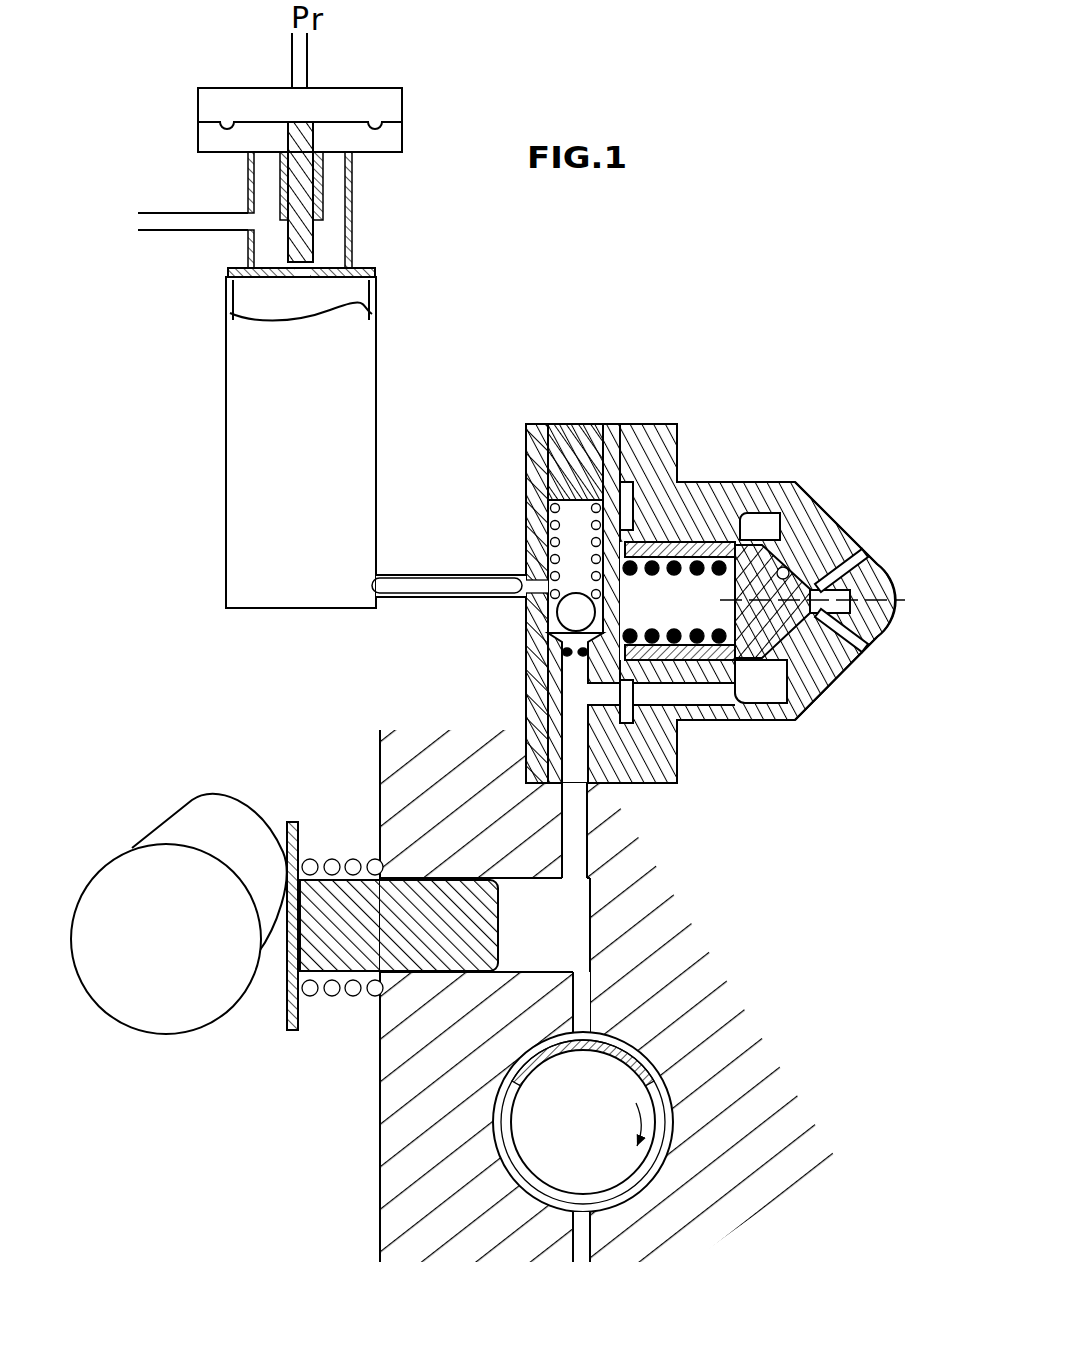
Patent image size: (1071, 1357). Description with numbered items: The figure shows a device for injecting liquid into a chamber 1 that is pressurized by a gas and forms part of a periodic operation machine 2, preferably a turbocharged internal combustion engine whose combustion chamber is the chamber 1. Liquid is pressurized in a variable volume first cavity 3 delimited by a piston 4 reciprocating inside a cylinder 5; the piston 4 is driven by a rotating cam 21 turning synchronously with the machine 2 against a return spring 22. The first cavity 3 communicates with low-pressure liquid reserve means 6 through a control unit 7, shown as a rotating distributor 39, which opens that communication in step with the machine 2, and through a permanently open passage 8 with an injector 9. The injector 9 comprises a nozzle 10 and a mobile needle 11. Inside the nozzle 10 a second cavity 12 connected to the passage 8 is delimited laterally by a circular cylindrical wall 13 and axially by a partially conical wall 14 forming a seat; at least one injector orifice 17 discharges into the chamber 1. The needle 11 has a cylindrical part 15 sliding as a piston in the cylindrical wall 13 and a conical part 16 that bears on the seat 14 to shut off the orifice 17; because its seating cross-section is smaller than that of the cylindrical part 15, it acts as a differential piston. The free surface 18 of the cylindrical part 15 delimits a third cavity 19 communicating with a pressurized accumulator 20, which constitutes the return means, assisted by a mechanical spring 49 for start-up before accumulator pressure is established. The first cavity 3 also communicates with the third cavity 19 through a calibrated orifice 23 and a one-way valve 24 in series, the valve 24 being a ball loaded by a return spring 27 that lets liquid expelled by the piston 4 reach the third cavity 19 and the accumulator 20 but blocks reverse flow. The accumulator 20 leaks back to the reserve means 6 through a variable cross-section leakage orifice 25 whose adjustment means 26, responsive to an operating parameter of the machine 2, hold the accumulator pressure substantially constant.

The chamber 1 is at (908, 581).
The periodic operation machine 2 is at (571, 412).
The first cavity 3 is at (540, 937).
The piston 4 is at (335, 945).
The cylinder 5 is at (553, 963).
The low-pressure liquid reserve means 6 is at (66, 222).
The control unit 7 is at (562, 1135).
The passage 8 is at (568, 813).
The injector 9 is at (851, 688).
The nozzle 10 is at (697, 500).
The needle 11 is at (750, 535).
The second cavity 12 is at (773, 537).
The circular cylindrical wall 13 is at (630, 548).
The partially conical wall 14 is at (778, 556).
The cylindrical part 15 is at (745, 718).
The conical part 16 is at (796, 721).
The injector orifice 17 is at (867, 562).
The free surface 18 is at (664, 783).
The third cavity 19 is at (633, 620).
The pressurized accumulator 20 is at (257, 528).
The rotating cam 21 is at (145, 1018).
The return spring 22 is at (337, 860).
The calibrated orifice 23 is at (565, 654).
The one-way valve 24 is at (560, 615).
The variable cross-section leakage orifice 25 is at (278, 282).
The adjustment means 26 is at (205, 158).
The return spring 27 is at (552, 524).
The rotating distributor 39 is at (488, 1113).
The mechanical spring 49 is at (713, 718).